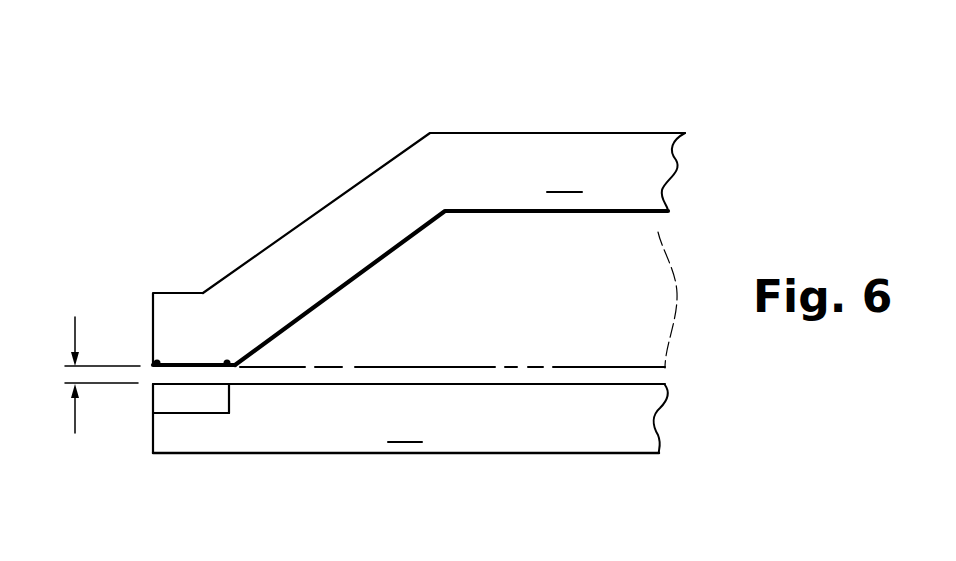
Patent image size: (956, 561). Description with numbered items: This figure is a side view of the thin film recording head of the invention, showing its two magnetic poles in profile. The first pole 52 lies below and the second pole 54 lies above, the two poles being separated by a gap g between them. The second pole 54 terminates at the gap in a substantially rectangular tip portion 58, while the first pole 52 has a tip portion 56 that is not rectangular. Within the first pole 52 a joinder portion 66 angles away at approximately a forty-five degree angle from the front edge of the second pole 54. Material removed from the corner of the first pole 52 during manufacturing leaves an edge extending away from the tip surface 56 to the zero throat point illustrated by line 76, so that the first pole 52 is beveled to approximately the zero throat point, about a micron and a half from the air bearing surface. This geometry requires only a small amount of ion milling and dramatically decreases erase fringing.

The first pole (P1) 52 is at (516, 460).
The second pole (P2) 54 is at (566, 124).
The tip portion of pole (P1) 56 is at (153, 418).
The tip portion of pole (P2) 58 is at (152, 320).
The joinder portion 66 is at (200, 402).
The zero throat point line 76 is at (232, 398).
The gap g is at (72, 375).